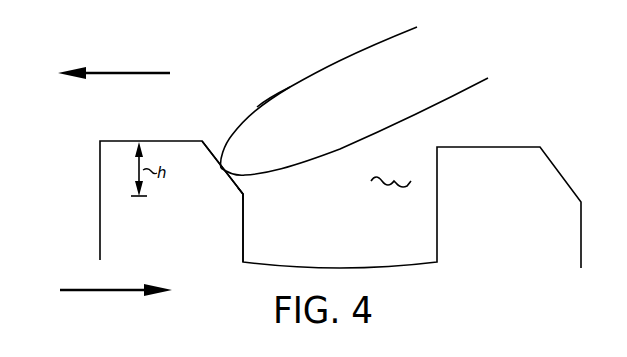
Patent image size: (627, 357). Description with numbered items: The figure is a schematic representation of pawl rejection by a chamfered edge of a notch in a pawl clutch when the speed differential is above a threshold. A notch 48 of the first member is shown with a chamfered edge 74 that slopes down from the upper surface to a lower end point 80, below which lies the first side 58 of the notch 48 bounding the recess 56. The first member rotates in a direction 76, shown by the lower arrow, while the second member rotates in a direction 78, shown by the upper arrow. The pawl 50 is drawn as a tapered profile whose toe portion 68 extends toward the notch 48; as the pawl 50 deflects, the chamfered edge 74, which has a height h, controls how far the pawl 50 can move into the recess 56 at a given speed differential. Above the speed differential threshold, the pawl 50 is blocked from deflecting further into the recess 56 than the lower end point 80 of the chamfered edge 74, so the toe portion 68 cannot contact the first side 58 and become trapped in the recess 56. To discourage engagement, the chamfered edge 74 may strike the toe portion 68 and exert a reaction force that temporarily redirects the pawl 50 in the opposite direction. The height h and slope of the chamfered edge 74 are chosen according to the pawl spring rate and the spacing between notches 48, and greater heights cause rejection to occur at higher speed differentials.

The notch 48 is at (98, 200).
The pawl 50 is at (352, 65).
The recess 56 is at (395, 180).
The first side 58 is at (244, 225).
The toe portion 68 is at (288, 102).
The chamfered edge 74 is at (210, 149).
The direction 76 is at (115, 292).
The direction 78 is at (113, 72).
The lower end point 80 is at (240, 197).